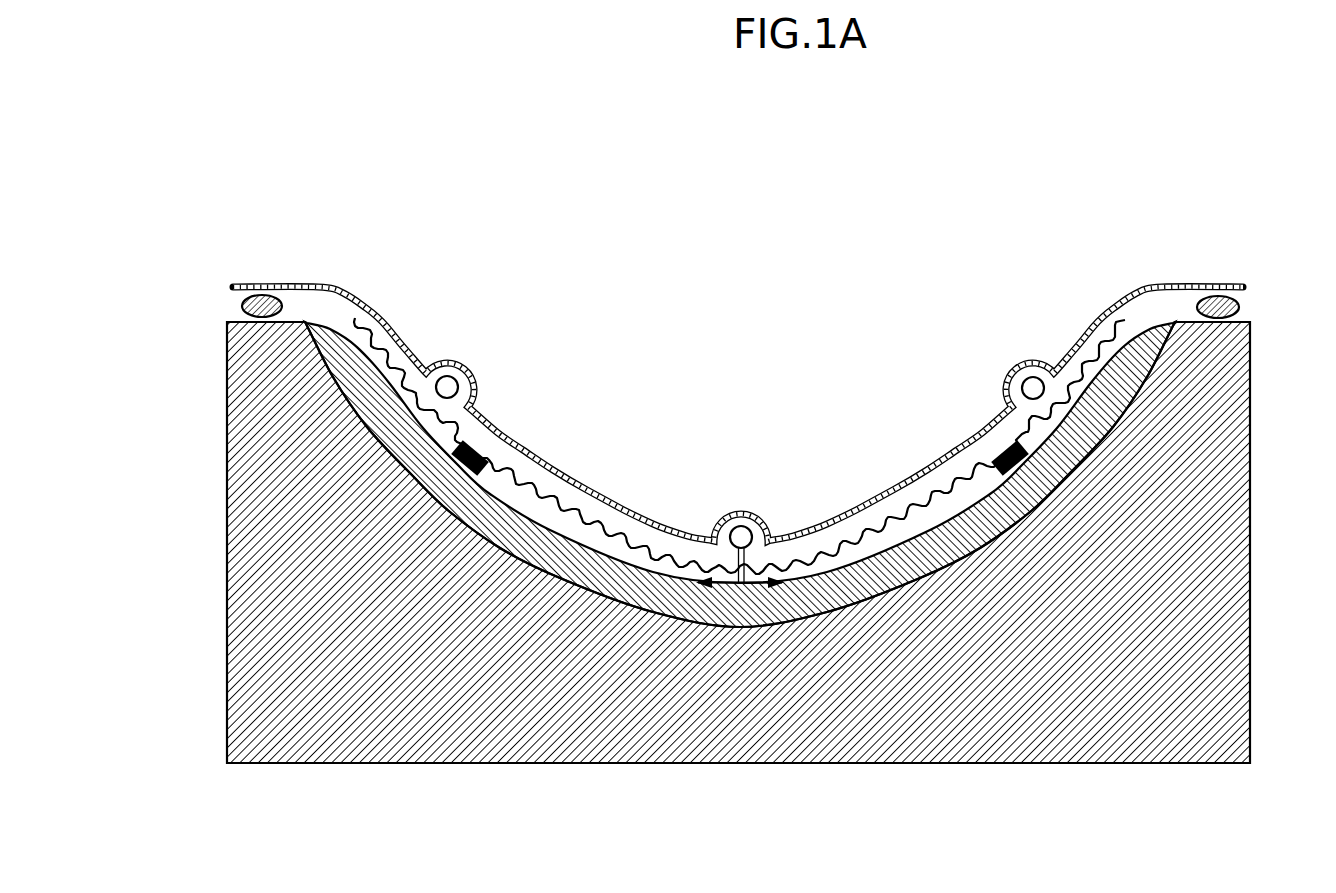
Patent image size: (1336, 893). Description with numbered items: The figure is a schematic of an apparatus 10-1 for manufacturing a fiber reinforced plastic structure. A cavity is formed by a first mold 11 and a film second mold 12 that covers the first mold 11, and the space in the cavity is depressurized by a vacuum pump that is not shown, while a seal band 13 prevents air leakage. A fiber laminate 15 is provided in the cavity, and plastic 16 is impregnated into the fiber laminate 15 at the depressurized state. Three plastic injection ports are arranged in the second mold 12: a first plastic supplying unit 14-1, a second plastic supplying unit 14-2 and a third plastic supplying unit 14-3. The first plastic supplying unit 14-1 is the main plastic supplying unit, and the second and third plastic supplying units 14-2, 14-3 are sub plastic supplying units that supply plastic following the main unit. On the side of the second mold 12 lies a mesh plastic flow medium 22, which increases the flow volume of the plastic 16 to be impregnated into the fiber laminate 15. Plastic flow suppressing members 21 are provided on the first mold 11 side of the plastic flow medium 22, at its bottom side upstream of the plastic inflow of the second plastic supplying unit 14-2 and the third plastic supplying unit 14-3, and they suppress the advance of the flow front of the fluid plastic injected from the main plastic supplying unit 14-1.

The apparatus for manufacturing a fiber reinforced plastic structure 10-1 is at (847, 220).
The first mold 11 is at (295, 727).
The film second mold 12 is at (328, 284).
The seal band 13 is at (227, 296).
The first plastic supplying unit 14-1 is at (741, 512).
The second plastic supplying unit 14-2 is at (1014, 368).
The third plastic supplying unit 14-3 is at (461, 359).
The fiber laminate 15 is at (960, 553).
The plastic 16 is at (758, 582).
The plastic flow suppressing members 21 is at (992, 472).
The mesh plastic flow medium 22 is at (528, 480).